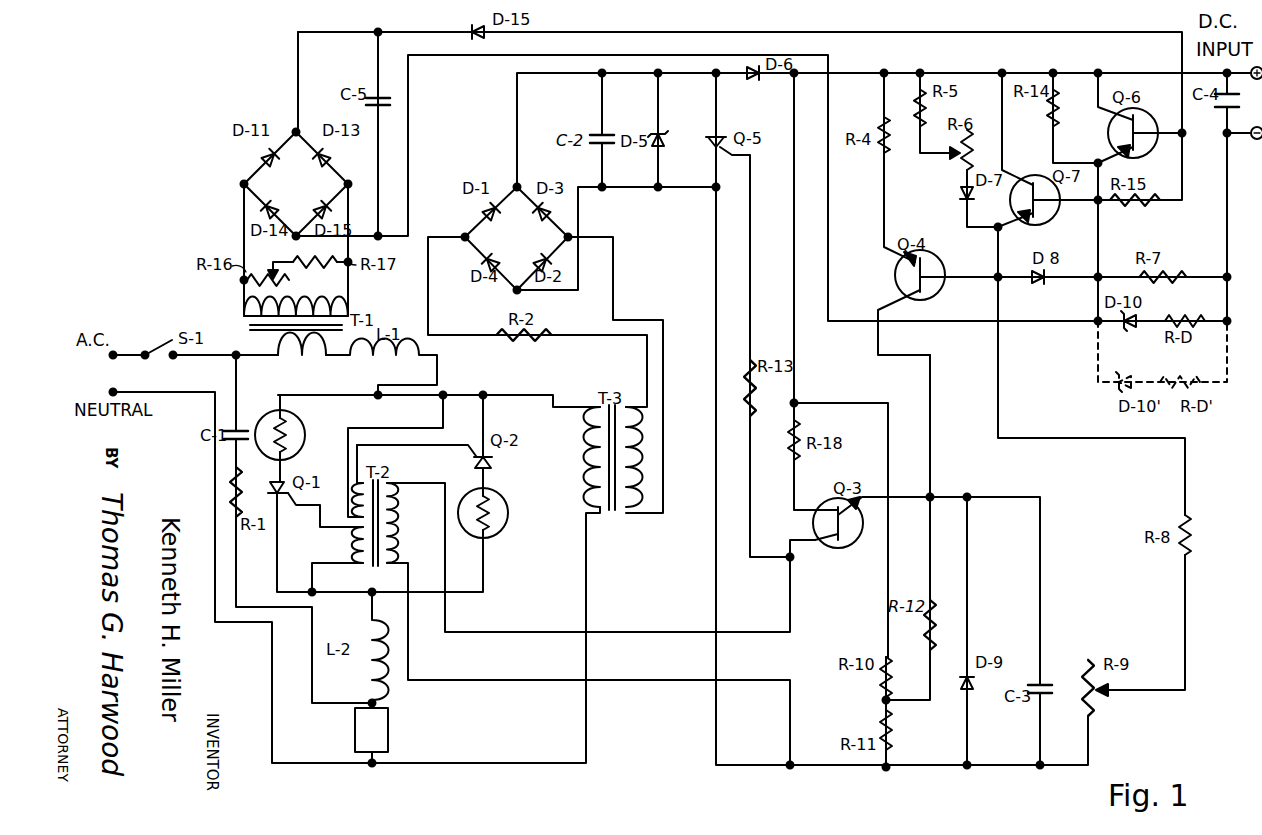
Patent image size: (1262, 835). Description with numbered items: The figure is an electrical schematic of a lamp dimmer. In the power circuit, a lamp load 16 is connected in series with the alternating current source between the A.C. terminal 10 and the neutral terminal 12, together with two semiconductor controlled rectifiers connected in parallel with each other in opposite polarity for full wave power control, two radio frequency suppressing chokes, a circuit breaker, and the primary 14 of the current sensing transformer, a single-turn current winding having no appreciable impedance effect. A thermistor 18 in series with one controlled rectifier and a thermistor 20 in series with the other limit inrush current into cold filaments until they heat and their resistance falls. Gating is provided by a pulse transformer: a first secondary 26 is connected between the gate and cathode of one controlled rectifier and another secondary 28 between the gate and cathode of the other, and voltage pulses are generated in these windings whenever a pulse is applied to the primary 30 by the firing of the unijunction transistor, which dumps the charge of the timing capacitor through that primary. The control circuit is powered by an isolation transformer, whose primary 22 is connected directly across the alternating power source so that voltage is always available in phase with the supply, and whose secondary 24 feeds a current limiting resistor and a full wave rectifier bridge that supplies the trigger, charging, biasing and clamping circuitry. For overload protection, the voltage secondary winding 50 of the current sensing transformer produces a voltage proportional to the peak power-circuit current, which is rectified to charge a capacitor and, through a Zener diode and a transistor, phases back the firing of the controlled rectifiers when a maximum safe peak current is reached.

The A.C. terminal 10 is at (113, 348).
The neutral terminal 12 is at (113, 386).
The primary of transformer T-1 14 is at (304, 361).
The lamp load 16 is at (355, 736).
The thermistor 18 is at (300, 424).
The thermistor 20 is at (498, 533).
The primary of isolation transformer T-3 22 is at (572, 462).
The secondary of isolation transformer T-3 24 is at (650, 460).
The first secondary of transformer T-2 26 is at (361, 548).
The secondary of transformer T-2 28 is at (359, 504).
The primary of transformer T-2 30 is at (400, 523).
The secondary winding of transformer T-1 50 is at (336, 290).